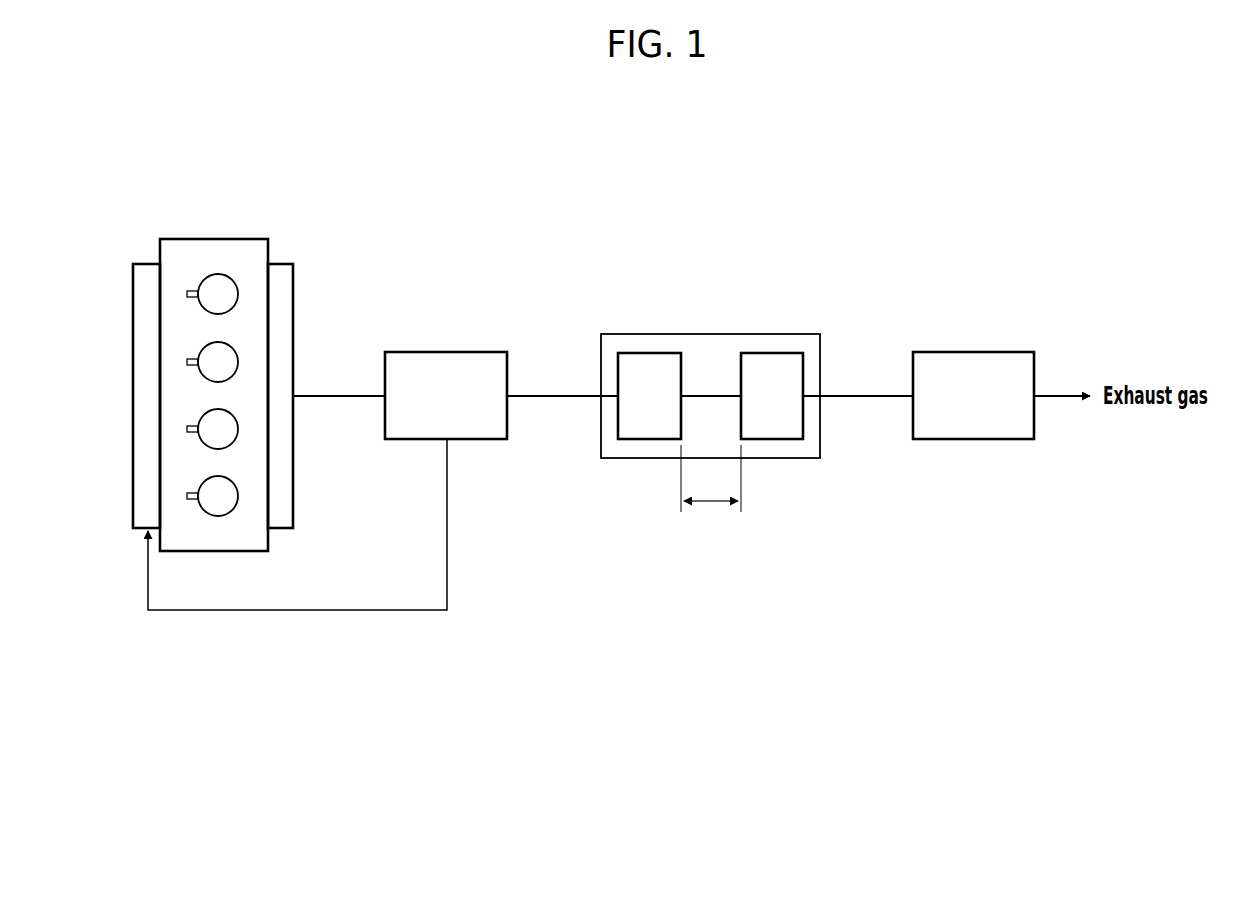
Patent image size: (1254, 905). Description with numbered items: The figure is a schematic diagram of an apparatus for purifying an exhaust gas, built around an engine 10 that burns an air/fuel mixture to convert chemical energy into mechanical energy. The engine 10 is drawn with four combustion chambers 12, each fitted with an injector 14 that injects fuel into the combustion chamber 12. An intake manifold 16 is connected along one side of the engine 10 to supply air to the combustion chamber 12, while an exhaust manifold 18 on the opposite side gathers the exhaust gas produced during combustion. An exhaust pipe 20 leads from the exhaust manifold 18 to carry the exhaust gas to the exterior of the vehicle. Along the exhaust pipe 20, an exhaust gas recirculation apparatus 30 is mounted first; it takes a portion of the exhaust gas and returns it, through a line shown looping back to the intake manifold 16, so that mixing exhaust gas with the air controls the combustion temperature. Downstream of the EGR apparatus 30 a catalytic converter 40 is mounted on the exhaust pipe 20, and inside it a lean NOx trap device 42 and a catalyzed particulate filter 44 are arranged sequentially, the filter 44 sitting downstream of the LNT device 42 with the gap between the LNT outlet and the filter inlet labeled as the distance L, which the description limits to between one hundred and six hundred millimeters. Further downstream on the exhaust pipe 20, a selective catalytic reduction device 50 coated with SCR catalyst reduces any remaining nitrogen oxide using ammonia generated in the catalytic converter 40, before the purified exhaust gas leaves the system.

The engine 10 is at (214, 236).
The combustion chamber 12 is at (228, 276).
The injector 14 is at (197, 291).
The intake manifold 16 is at (142, 264).
The exhaust manifold 18 is at (281, 264).
The exhaust pipe 20 is at (552, 396).
The exhaust gas recirculation (EGR) apparatus 30 is at (447, 352).
The catalytic converter 40 is at (710, 393).
The lean NOx trap (LNT) device 42 is at (648, 353).
The catalyzed particulate filter (CPF) 44 is at (770, 353).
The selective catalytic reduction (SCR) device 50 is at (972, 352).